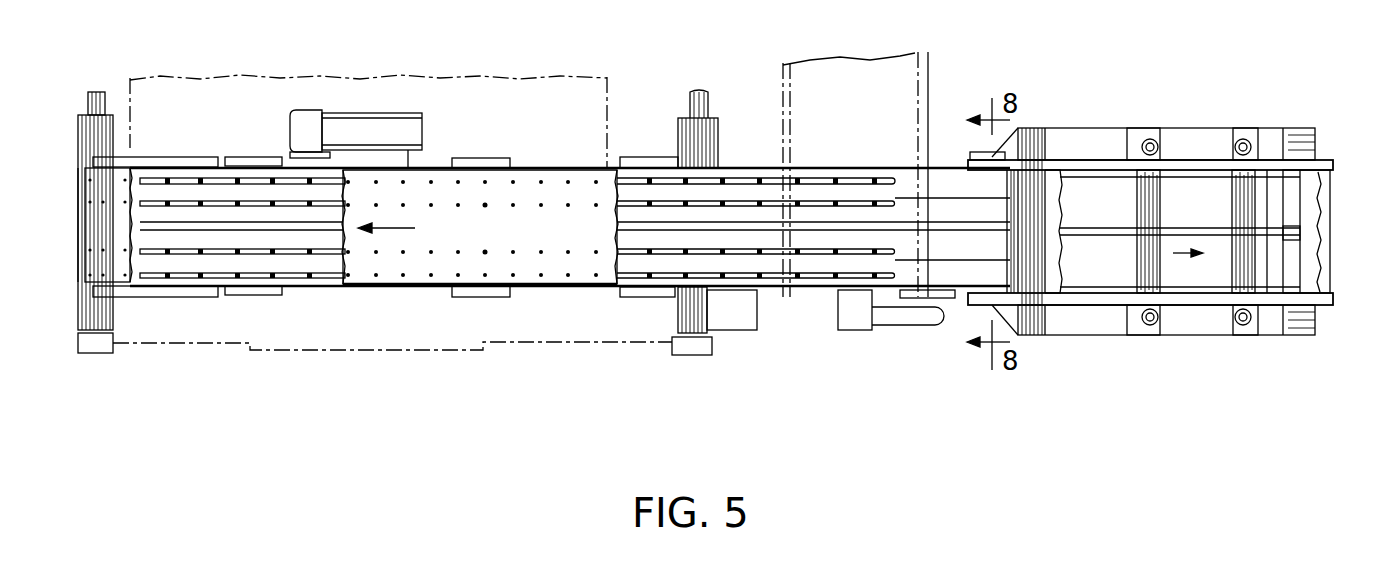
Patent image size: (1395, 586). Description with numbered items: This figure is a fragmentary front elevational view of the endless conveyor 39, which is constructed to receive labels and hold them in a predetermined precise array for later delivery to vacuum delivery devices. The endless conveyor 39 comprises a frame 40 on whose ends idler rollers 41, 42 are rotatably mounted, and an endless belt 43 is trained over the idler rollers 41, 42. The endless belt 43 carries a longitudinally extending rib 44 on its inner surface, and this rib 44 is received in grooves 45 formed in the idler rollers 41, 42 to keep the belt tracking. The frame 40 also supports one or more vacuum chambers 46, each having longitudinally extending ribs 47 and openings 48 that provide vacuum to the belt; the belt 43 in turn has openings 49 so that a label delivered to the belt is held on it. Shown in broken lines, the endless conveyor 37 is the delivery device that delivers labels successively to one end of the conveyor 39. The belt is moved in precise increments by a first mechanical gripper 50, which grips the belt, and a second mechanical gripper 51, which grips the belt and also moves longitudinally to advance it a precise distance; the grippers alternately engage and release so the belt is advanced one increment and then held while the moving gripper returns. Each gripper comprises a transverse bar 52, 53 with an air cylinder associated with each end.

The endless conveyor 37 is at (920, 50).
The endless conveyor 39 is at (618, 143).
The frame 40 is at (176, 157).
The idler roller 41 is at (103, 216).
The idler roller 42 is at (1302, 195).
The endless belt 43 is at (416, 262).
The longitudinally extending rib 44 is at (1200, 235).
The grooves 45 is at (1297, 235).
The vacuum chamber 46 is at (290, 284).
The longitudinally extending ribs 47 is at (247, 180).
The openings 48 is at (268, 178).
The openings 49 is at (487, 207).
The first mechanical gripper 50 is at (1250, 128).
The second mechanical gripper 51 is at (1150, 128).
The transverse bar 52 is at (1243, 232).
The transverse bar 53 is at (1145, 232).